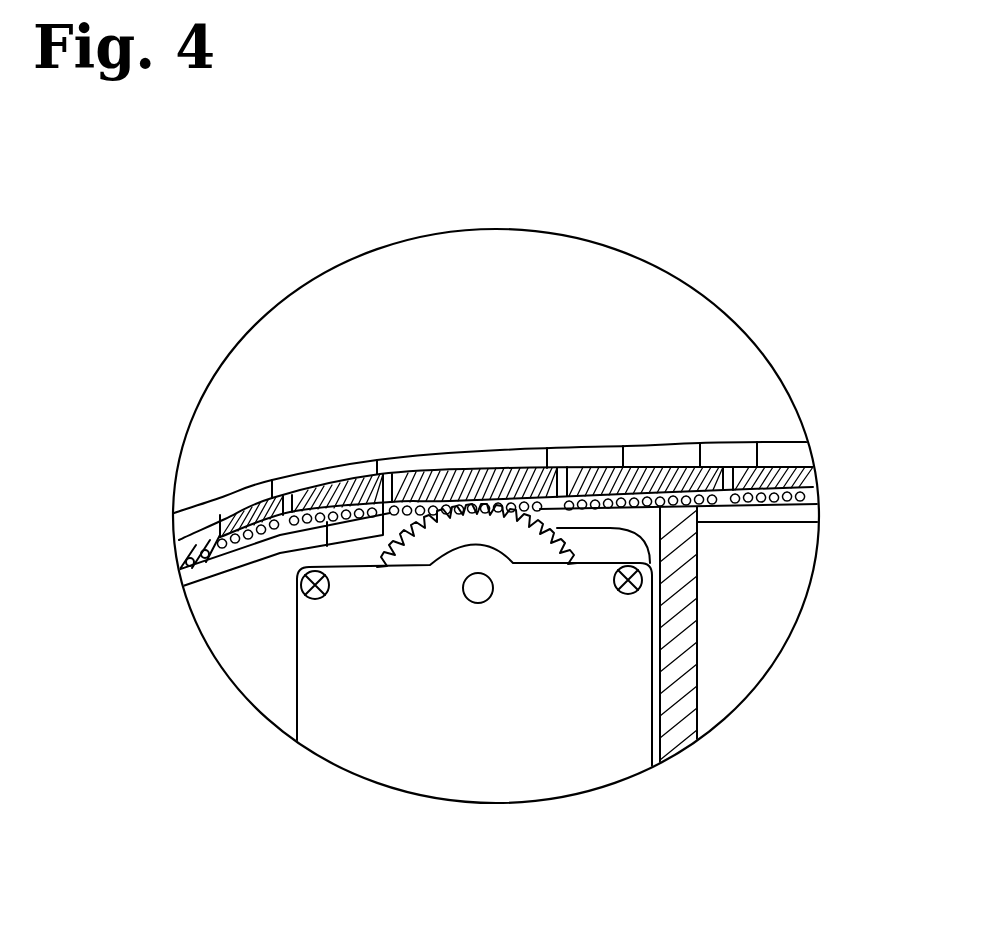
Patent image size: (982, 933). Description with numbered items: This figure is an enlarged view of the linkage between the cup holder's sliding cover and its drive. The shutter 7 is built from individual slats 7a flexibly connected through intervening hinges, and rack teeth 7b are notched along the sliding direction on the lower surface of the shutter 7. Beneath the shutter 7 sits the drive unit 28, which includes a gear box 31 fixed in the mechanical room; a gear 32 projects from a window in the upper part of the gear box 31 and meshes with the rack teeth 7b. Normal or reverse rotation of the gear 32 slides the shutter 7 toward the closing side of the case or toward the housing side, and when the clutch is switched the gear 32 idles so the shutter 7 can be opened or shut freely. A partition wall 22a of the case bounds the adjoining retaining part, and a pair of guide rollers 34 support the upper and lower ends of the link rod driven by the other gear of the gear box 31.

The shutter 7 is at (550, 457).
The slats 7a is at (272, 480).
The rack teeth 7b is at (377, 473).
The drive unit 28 is at (368, 708).
The gear box 31 is at (623, 664).
The gear 32 is at (513, 533).
The guide rollers 34 is at (700, 547).
The partition wall 22a is at (700, 578).